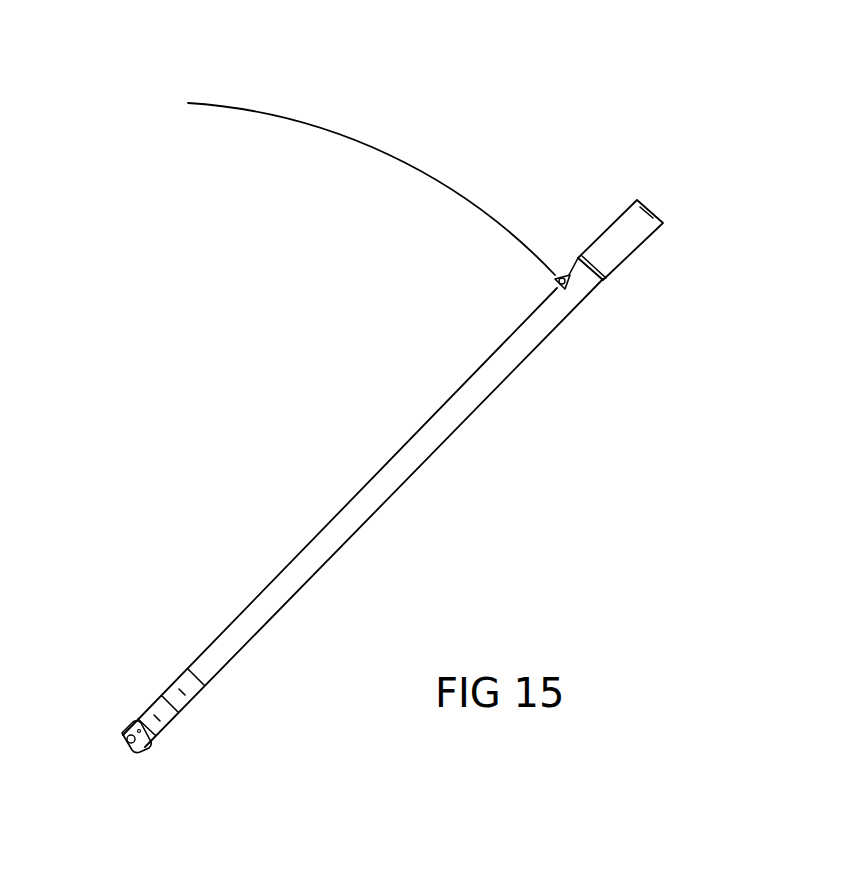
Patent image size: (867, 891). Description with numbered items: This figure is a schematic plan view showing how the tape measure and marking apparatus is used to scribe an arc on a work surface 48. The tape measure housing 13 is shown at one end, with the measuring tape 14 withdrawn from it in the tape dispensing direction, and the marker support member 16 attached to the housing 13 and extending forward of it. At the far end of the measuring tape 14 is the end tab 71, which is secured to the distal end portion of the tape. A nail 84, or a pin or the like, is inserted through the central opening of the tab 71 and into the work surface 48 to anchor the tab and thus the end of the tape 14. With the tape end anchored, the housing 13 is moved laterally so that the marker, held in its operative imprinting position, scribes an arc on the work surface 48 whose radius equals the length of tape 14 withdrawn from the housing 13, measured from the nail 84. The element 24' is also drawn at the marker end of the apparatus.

The tape measure housing 13 is at (625, 250).
The measuring tape 14 is at (455, 418).
The marker support member 16 is at (566, 272).
The tip point 24' is at (512, 294).
The work surface 48 is at (242, 396).
The end tab 71 is at (123, 724).
The nail 84 is at (145, 743).